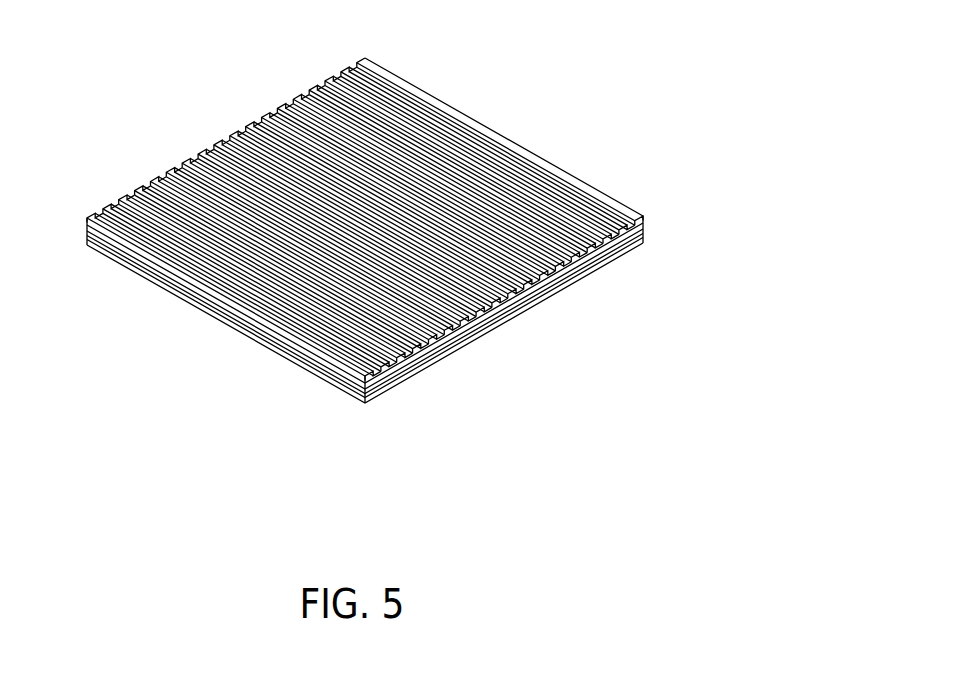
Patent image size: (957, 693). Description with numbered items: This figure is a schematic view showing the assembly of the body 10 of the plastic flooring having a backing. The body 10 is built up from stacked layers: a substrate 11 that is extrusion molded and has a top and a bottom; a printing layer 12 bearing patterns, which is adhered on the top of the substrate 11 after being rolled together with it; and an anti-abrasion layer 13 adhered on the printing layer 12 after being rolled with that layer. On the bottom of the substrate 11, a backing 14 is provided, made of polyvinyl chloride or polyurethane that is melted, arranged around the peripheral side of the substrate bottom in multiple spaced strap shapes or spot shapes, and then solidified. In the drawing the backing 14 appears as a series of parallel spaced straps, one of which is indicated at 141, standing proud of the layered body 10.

The body 10 is at (348, 217).
The substrate 11 is at (217, 303).
The printing layer 12 is at (272, 345).
The anti-abrasion layer 13 is at (168, 288).
The backing 14 is at (348, 203).
The rib top surface 141 is at (237, 137).